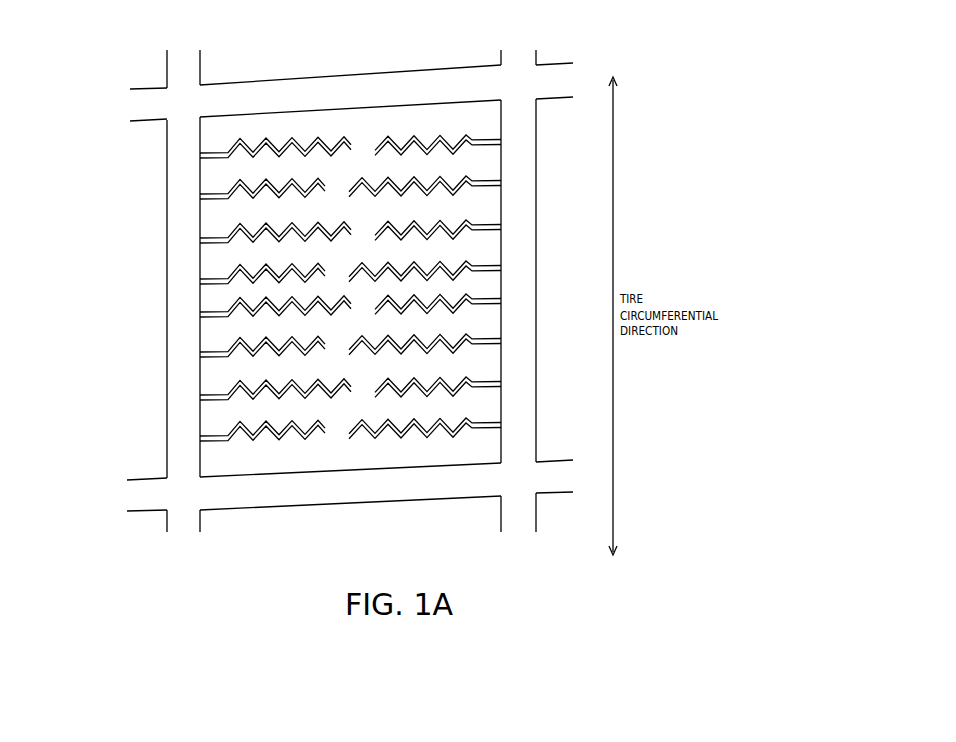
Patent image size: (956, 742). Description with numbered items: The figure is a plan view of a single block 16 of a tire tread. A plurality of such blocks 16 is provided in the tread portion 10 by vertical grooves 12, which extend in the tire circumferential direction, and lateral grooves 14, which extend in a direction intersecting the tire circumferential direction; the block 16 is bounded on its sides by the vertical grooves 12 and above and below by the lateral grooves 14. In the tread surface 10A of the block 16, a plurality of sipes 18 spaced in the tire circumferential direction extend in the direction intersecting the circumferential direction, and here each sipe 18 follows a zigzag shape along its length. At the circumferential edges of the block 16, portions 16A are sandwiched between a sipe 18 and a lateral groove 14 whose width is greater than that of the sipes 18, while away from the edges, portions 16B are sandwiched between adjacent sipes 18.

The tread portion 10 is at (138, 47).
The tread surface 10A is at (445, 63).
The vertical groove 12 is at (195, 302).
The lateral groove 14 is at (361, 102).
The block 16 is at (502, 63).
The portion of the block 16A is at (475, 120).
The portion of the block 16B is at (492, 165).
The sipe 18 is at (287, 183).